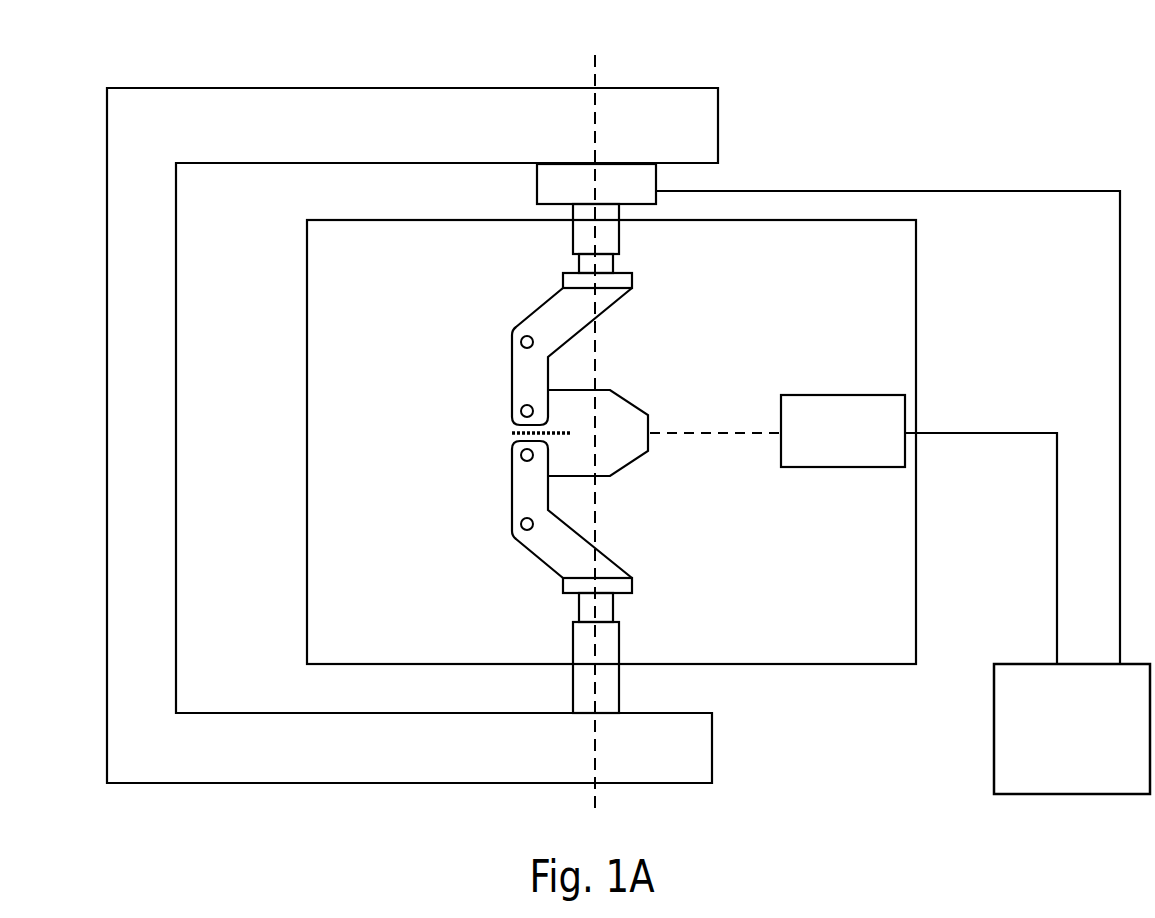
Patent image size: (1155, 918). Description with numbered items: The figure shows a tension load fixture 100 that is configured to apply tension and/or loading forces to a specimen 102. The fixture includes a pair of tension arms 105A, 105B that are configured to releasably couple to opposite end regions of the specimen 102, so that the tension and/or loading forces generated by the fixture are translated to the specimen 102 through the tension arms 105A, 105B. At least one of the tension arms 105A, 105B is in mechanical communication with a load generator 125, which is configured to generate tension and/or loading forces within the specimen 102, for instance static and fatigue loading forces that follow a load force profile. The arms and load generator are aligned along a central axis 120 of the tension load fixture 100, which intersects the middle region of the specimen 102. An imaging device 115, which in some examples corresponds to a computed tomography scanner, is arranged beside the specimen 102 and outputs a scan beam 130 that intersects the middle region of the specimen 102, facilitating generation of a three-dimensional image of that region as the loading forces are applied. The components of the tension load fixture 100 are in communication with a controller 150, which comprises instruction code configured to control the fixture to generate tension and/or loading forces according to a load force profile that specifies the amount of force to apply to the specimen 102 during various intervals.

The tension load fixture 100 is at (108, 98).
The specimen 102 is at (635, 412).
The tension arm 105A is at (523, 318).
The tension arm 105B is at (523, 547).
The imaging device 115 is at (833, 395).
The central axis 120 is at (595, 77).
The load generator 125 is at (658, 202).
The scan beam 130 is at (717, 433).
The controller 150 is at (1072, 729).